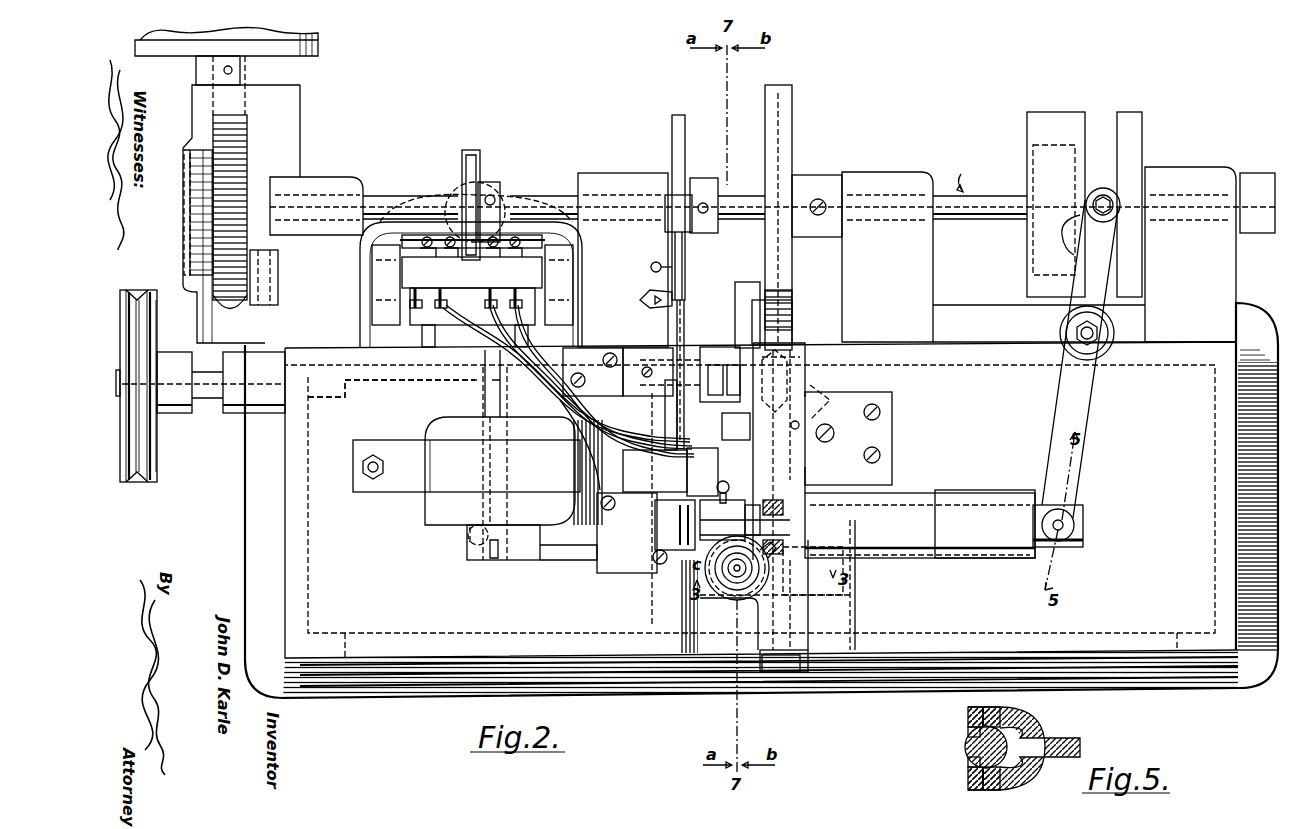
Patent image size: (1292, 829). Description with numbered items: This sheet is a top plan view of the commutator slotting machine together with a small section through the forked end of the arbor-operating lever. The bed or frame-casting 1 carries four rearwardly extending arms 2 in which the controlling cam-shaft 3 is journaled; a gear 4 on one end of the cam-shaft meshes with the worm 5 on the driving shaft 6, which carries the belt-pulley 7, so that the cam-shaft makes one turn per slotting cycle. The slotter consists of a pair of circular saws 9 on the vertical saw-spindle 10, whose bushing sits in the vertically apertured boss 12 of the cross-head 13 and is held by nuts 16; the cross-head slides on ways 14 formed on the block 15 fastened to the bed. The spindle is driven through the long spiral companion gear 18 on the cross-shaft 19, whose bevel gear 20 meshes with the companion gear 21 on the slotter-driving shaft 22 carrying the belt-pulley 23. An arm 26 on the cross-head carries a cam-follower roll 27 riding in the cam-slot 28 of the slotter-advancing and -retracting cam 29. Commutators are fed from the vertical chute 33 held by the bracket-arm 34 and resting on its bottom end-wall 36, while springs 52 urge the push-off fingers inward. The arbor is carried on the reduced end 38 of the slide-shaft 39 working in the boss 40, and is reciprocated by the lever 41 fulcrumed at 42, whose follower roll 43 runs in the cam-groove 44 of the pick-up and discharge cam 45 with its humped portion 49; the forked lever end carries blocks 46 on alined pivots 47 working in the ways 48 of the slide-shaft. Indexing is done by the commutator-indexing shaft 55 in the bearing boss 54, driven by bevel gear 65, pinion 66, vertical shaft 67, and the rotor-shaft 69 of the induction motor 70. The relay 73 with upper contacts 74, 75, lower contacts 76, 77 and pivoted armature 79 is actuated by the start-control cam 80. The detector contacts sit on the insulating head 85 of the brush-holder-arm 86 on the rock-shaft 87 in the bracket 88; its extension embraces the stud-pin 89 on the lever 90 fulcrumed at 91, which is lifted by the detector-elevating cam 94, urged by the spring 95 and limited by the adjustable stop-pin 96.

In FIG. 2, the bed or frame-casting 1 is at (285, 515).
In FIG. 2, the rearwardly extending arms 2 is at (323, 177).
In FIG. 2, the controlling cam-shaft 3 is at (546, 196).
In FIG. 2, the gear 4 is at (240, 140).
In FIG. 2, the worm 5 is at (205, 206).
In FIG. 2, the driving shaft 6 is at (208, 71).
In FIG. 2, the belt-pulley 7 is at (318, 35).
In FIG. 2, the circular slot-cutters or saws 9 is at (718, 590).
In FIG. 2, the vertical saw-spindle 10 is at (737, 580).
In FIG. 2, the vertically apertured boss 12 is at (727, 590).
In FIG. 2, the cross-head 13 is at (800, 343).
In FIG. 2, the ways 14 is at (775, 598).
In FIG. 2, the block 15 is at (855, 650).
In FIG. 2, the nuts 16 is at (758, 592).
In FIG. 2, the companion gear 18 is at (843, 583).
In FIG. 2, the cross-shaft 19 is at (808, 453).
In FIG. 2, the bevel gear 20 is at (828, 398).
In FIG. 2, the companion gear 21 is at (800, 354).
In FIG. 2, the slotter-driving shaft 22 is at (400, 398).
In FIG. 2, the belt-pulley 23 is at (157, 440).
In FIG. 2, the arm 26 is at (740, 333).
In FIG. 2, the cam-follower roll 27 is at (772, 285).
In FIG. 2, the cam-slot 28 is at (772, 93).
In FIG. 2, the slotter-advancing and -retracting cam 29 is at (792, 130).
In FIG. 2, the vertical magazine or chute 33 is at (777, 505).
In FIG. 2, the bracket-arm 34 is at (888, 470).
In FIG. 2, the bottom end-wall 36 is at (743, 498).
In FIG. 2, the reduced end 38 is at (748, 508).
In FIG. 2, the slide-shaft 39 is at (945, 503).
In FIG. 5, the slide-shaft 39 is at (966, 749).
In FIG. 2, the boss 40 is at (993, 492).
In FIG. 2, the lever 41 is at (1092, 392).
In FIG. 5, the lever 41 is at (1055, 742).
In FIG. 2, the fulcrum 42 is at (1092, 333).
In FIG. 2, the follower roll 43 is at (1118, 190).
In FIG. 2, the cam-groove 44 is at (1088, 118).
In FIG. 2, the commutator pick-up and discharge cam 45 is at (1130, 114).
In FIG. 2, the blocks 46 is at (1075, 518).
In FIG. 5, the blocks 46 is at (968, 727).
In FIG. 2, the alined pivots 47 is at (1063, 527).
In FIG. 5, the alined pivots 47 is at (985, 715).
In FIG. 2, the ways 48 is at (1062, 542).
In FIG. 5, the ways 48 is at (968, 732).
In FIG. 2, the humped portion 49 is at (1082, 215).
In FIG. 2, the springs 52 is at (772, 555).
In FIG. 2, the bearing boss 54 is at (555, 550).
In FIG. 2, the commutator-indexing shaft 55 is at (590, 545).
In FIG. 2, the bevel gear 65 is at (490, 556).
In FIG. 2, the pinion 66 is at (468, 542).
In FIG. 2, the vertical shaft 67 is at (468, 534).
In FIG. 2, the rotor-shaft 69 is at (495, 450).
In FIG. 2, the induction motor 70 is at (440, 505).
In FIG. 2, the relay 73 is at (405, 270).
In FIG. 2, the upper contact 74 is at (471, 261).
In FIG. 2, the upper contact 75 is at (472, 282).
In FIG. 2, the lower contact 76 is at (545, 243).
In FIG. 2, the lower contact 77 is at (407, 235).
In FIG. 2, the pivoted armature 79 is at (474, 150).
In FIG. 2, the start-control cam 80 is at (482, 182).
In FIG. 2, the insulating head 85 is at (735, 483).
In FIG. 2, the brush-holder-arm 86 is at (683, 452).
In FIG. 2, the rock-shaft 87 is at (630, 508).
In FIG. 2, the bracket 88 is at (633, 505).
In FIG. 2, the stud-pin 89 is at (688, 425).
In FIG. 2, the lever 90 is at (686, 272).
In FIG. 2, the fulcrum 91 is at (690, 355).
In FIG. 2, the detector-elevating cam 94 is at (686, 146).
In FIG. 2, the spring 95 is at (656, 262).
In FIG. 2, the adjustable stop-pin 96 is at (640, 302).